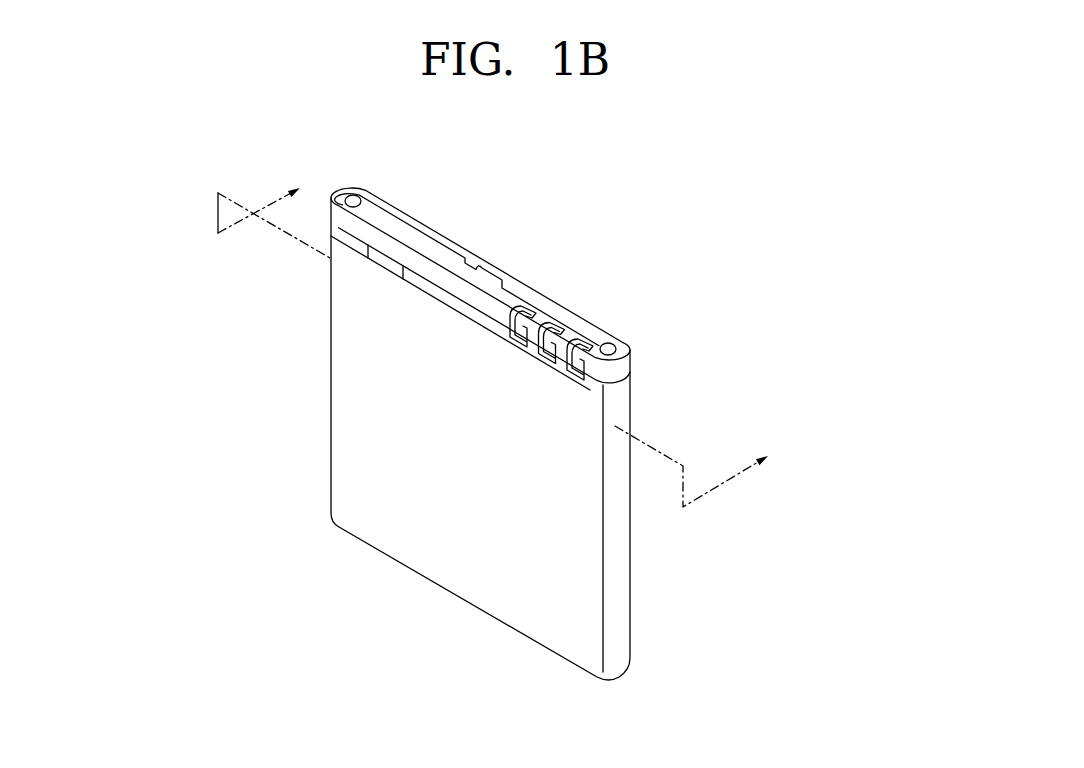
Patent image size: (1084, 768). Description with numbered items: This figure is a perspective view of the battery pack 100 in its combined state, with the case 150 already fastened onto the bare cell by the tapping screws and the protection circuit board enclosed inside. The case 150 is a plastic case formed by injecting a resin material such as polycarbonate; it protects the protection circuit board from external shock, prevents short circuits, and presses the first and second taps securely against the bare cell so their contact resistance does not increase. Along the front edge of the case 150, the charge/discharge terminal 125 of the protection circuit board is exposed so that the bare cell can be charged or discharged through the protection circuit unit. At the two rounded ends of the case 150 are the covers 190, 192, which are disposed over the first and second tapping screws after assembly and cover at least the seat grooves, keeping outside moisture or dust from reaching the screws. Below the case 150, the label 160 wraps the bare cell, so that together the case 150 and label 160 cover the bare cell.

The battery pack 100 is at (745, 167).
The charge/discharge terminal 125 is at (592, 345).
The case 150 is at (463, 236).
The label 160 is at (457, 578).
The cover 190 is at (353, 195).
The cover 192 is at (612, 346).